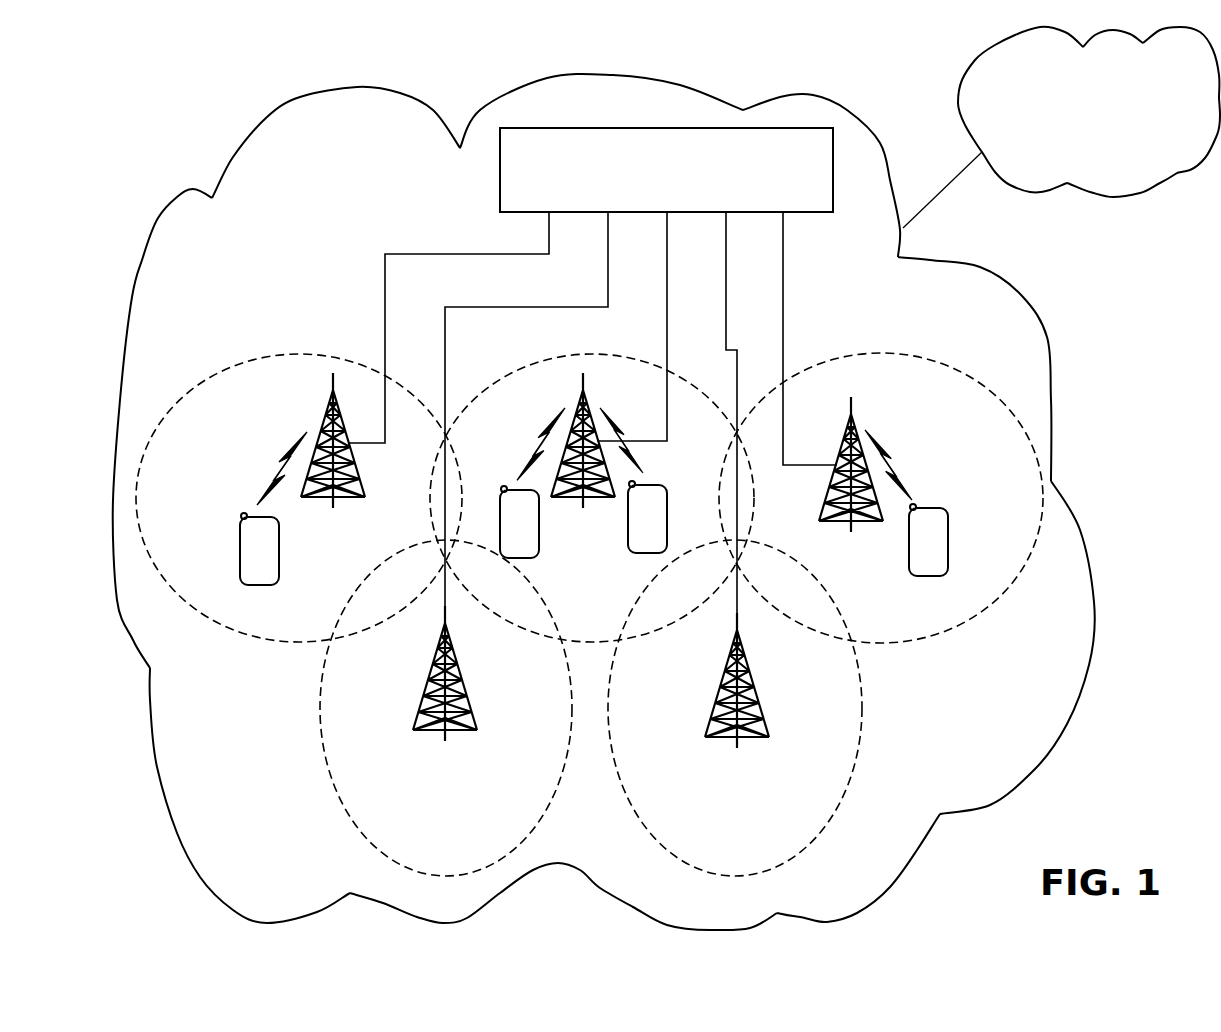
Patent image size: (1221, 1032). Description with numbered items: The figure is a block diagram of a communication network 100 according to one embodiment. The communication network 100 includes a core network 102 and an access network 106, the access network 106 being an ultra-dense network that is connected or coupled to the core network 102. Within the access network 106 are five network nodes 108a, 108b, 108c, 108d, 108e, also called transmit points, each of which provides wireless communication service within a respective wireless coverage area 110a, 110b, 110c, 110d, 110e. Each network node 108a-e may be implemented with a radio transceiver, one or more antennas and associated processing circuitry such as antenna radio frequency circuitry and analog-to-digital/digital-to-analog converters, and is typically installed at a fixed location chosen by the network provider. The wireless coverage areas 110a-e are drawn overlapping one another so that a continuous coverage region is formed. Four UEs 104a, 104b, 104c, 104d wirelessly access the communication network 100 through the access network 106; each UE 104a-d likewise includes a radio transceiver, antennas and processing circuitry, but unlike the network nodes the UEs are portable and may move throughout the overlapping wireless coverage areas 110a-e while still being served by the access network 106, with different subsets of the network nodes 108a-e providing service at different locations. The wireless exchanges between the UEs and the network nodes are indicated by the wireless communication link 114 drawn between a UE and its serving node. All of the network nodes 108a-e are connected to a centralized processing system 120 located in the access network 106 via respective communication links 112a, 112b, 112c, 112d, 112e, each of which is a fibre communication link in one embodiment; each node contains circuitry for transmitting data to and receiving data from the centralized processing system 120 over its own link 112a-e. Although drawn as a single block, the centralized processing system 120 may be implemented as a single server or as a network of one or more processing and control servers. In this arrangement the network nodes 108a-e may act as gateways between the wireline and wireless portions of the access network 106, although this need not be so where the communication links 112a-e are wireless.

The communication network 100 is at (122, 118).
The core network 102 is at (1061, 127).
The access network 106 is at (540, 87).
The centralized processing system 120 is at (666, 170).
The communication link 112a is at (449, 253).
The communication link 112b is at (668, 304).
The communication link 112c is at (784, 304).
The communication link 112d is at (532, 306).
The communication link 112e is at (727, 304).
The wireless coverage area 110a is at (228, 370).
The wireless coverage area 110b is at (518, 372).
The wireless coverage area 110c is at (975, 355).
The wireless coverage area 110d is at (352, 818).
The wireless coverage area 110e is at (832, 818).
The network node 108a is at (329, 397).
The network node 108b is at (580, 396).
The network node 108c is at (856, 413).
The network node 108d is at (453, 660).
The network node 108e is at (745, 660).
The UE 104a is at (262, 586).
The UE 104b is at (539, 520).
The UE 104c is at (641, 554).
The UE 104d is at (927, 578).
The wireless communication link 114 is at (272, 468).